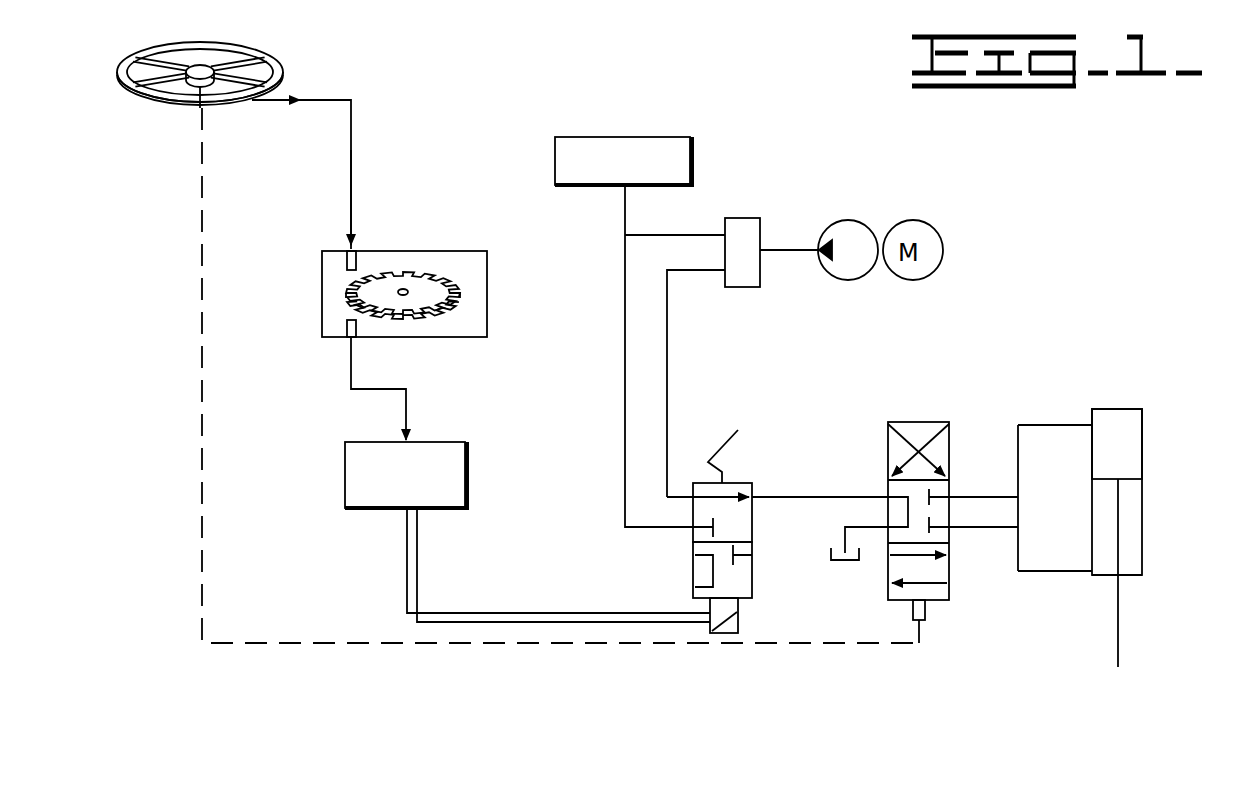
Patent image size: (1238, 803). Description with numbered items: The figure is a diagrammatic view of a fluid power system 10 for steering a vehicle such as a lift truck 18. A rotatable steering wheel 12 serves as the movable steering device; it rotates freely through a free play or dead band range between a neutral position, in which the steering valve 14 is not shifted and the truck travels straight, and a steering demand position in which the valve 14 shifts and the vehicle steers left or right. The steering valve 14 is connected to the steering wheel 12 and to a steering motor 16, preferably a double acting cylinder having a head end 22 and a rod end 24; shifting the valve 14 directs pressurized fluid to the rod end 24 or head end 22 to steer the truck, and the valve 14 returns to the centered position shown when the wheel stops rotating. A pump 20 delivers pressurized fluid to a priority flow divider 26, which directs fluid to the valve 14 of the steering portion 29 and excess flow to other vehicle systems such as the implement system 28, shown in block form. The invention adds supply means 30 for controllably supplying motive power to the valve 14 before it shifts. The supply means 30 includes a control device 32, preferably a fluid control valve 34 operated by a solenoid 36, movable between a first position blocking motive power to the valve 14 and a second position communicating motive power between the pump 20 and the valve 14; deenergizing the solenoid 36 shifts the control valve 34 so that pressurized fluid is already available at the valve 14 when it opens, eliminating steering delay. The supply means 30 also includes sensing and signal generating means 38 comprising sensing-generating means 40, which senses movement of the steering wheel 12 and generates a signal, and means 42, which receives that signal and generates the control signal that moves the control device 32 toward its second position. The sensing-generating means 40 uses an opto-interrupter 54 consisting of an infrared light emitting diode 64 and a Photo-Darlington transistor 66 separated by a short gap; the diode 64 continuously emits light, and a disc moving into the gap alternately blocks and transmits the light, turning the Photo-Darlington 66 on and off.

The fluid power system 10 is at (688, 92).
The steering wheel 12 is at (248, 46).
The steering valve 14 is at (950, 590).
The steering motor 16 is at (1144, 492).
The lift truck 18 is at (1065, 222).
The pump 20 is at (866, 263).
The head end 22 is at (1144, 438).
The rod end 24 is at (1144, 557).
The priority flow divider 26 is at (762, 278).
The implement system 28 is at (636, 176).
The steering portion 29 is at (790, 398).
The supply means 30 is at (650, 653).
The control device 32 is at (754, 521).
The fluid control valve 34 is at (754, 592).
The solenoid 36 is at (713, 630).
The sensing and signal generating means 38 is at (300, 434).
The sensing-generating means 40 is at (430, 245).
The signal receiving means 42 is at (472, 470).
The opto-interrupter 54 is at (316, 283).
The infrared light emitting diode 64 is at (348, 254).
The Photo-Darlington transistor 66 is at (349, 336).